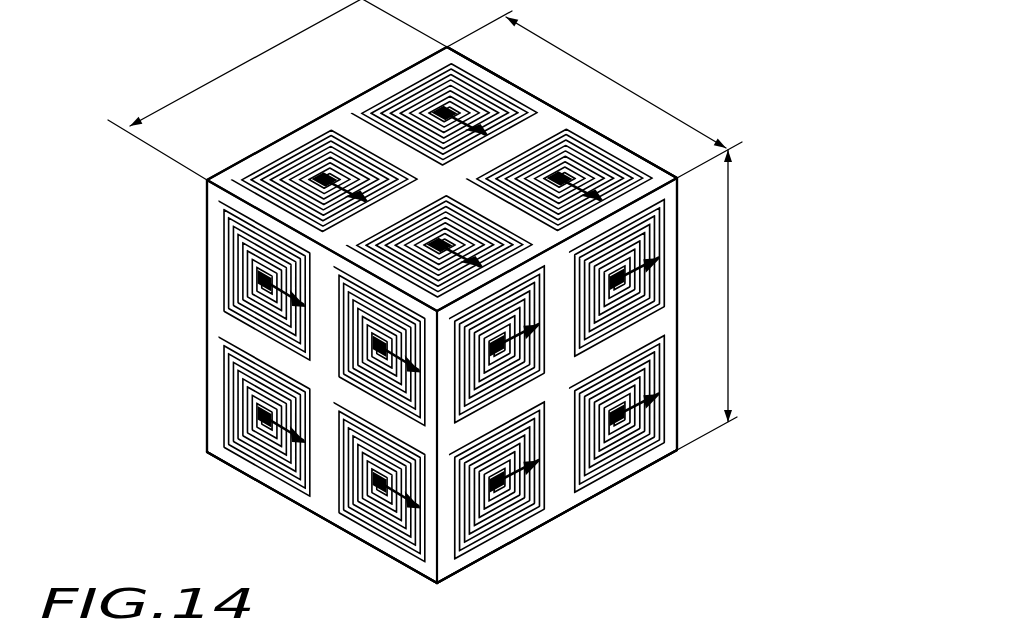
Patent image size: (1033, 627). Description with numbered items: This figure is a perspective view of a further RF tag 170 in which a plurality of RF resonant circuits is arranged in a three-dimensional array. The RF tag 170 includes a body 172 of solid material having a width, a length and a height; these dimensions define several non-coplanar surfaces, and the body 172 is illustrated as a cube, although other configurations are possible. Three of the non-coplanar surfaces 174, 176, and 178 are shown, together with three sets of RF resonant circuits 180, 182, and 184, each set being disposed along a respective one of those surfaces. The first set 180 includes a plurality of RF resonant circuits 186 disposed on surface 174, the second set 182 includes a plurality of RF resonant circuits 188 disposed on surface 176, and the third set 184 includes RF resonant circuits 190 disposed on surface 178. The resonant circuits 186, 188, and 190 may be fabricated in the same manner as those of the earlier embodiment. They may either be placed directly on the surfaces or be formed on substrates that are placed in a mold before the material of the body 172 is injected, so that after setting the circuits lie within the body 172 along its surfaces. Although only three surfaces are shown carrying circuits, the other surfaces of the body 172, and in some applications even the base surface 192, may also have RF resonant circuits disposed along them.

The RF tag 170 is at (718, 71).
The body 172 is at (204, 365).
The non-coplanar surface 174 is at (665, 322).
The non-coplanar surface 176 is at (527, 100).
The non-coplanar surface 178 is at (213, 431).
The first set of RF resonant circuits 180 is at (518, 535).
The second set of RF resonant circuits 182 is at (345, 128).
The third set of RF resonant circuits 184 is at (328, 497).
The RF resonant circuits 186 is at (485, 542).
The RF resonant circuits 188 is at (292, 147).
The RF resonant circuits 190 is at (220, 290).
The base surface 192 is at (605, 493).